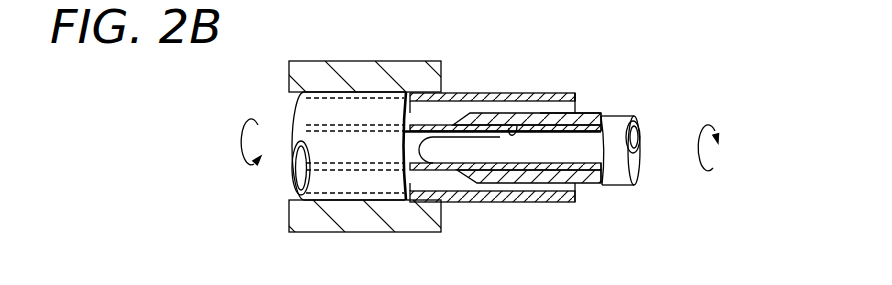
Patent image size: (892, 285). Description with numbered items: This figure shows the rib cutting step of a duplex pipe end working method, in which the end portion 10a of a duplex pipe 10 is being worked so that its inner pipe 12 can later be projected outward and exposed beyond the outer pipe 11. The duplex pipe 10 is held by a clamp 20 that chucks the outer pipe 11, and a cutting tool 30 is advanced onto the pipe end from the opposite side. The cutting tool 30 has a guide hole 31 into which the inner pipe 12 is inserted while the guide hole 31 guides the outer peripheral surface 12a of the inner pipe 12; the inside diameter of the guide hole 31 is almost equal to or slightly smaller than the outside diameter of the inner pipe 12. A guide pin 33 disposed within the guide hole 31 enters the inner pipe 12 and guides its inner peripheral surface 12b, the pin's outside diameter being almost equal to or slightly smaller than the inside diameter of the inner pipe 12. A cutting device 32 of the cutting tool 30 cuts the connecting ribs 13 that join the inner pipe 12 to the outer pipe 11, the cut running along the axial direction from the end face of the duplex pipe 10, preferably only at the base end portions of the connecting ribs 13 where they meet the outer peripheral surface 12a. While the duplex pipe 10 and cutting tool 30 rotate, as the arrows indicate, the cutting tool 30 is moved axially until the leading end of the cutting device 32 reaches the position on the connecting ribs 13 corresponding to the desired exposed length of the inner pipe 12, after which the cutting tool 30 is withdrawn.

The duplex pipe 10 is at (306, 110).
The end portion of the duplex pipe 10a is at (584, 84).
The outer pipe 11 is at (572, 204).
The inner pipe 12 is at (540, 171).
The outer peripheral surface of the inner pipe 12a is at (558, 117).
The inner peripheral surface of the inner pipe 12b is at (517, 126).
The connecting ribs 13 is at (488, 107).
The clamp 20 is at (313, 64).
The cutting tool 30 is at (645, 114).
The guide hole 31 is at (596, 117).
The cutting device 32 is at (500, 168).
The guide pin 33 is at (438, 140).